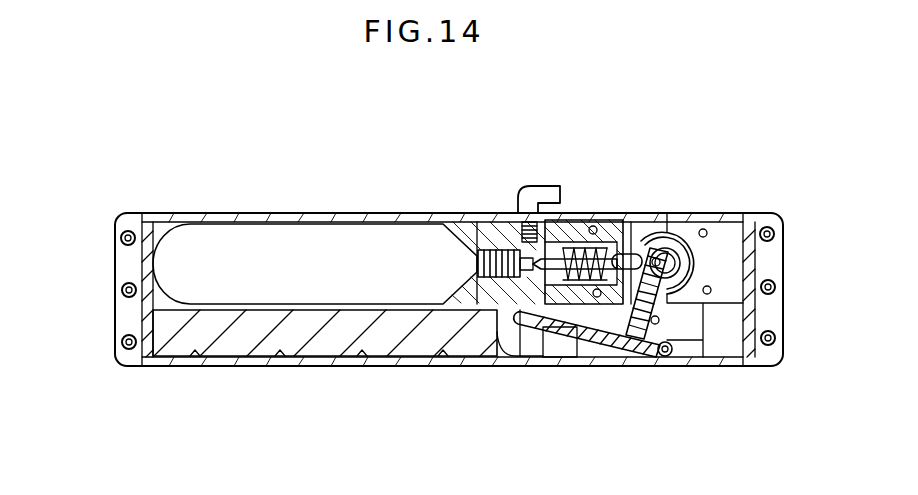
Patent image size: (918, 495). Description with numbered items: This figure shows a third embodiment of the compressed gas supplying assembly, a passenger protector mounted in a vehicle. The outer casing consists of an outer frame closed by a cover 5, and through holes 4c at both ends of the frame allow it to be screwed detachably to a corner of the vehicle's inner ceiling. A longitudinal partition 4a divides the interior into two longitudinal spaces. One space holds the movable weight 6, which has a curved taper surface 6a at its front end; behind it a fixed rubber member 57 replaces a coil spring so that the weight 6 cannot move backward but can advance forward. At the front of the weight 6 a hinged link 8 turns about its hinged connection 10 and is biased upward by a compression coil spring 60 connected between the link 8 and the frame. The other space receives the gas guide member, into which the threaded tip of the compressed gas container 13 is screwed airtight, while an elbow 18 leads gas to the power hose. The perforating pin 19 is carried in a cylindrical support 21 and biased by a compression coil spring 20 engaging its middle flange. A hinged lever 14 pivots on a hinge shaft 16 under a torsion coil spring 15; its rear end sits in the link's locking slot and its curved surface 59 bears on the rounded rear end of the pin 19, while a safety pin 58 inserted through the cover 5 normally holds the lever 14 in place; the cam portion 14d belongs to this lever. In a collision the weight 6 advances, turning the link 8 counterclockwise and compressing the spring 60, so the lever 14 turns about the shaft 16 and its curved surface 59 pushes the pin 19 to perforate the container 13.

The cover 5 is at (257, 216).
The longitudinal partition 4a is at (322, 312).
The through holes 4c is at (122, 340).
The movable weight 6 is at (392, 335).
The curved taper surface 6a is at (500, 345).
The hinged link 8 is at (573, 327).
The hinged connection 10 is at (667, 358).
The compressed gas container 13 is at (207, 253).
The hinged lever 14 is at (655, 305).
The cam portion of lever 14d is at (660, 250).
The torsion coil spring 15 is at (718, 258).
The hinge shaft 16 is at (682, 238).
The elbow 18 is at (532, 192).
The perforating pin 19 is at (627, 256).
The compression coil spring 20 is at (595, 250).
The cylindrical support 21 is at (578, 244).
The fixed rubber member 57 is at (238, 336).
The safety pin 58 is at (640, 346).
The curved surface 59 is at (643, 253).
The compression coil spring 60 is at (538, 358).